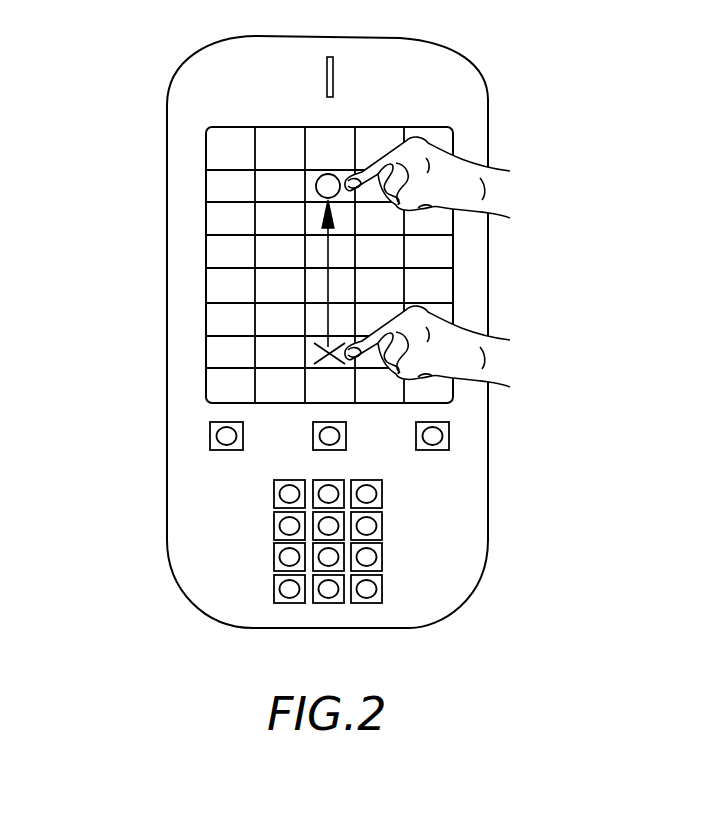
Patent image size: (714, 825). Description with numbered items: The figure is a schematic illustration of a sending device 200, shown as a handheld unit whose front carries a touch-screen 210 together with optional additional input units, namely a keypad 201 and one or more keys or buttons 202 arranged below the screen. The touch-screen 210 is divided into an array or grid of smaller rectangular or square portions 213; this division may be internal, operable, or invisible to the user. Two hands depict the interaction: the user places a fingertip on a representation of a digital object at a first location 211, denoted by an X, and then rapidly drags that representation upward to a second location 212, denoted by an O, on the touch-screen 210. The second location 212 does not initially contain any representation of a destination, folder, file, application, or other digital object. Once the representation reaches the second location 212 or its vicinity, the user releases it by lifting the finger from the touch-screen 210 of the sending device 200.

The sending device 200 is at (178, 587).
The keypad 201 is at (254, 515).
The keys or buttons 202 is at (220, 433).
The touch-screen 210 is at (206, 150).
The first location 211 is at (290, 348).
The second location 212 is at (288, 187).
The rectangular or square portions 213 is at (231, 290).